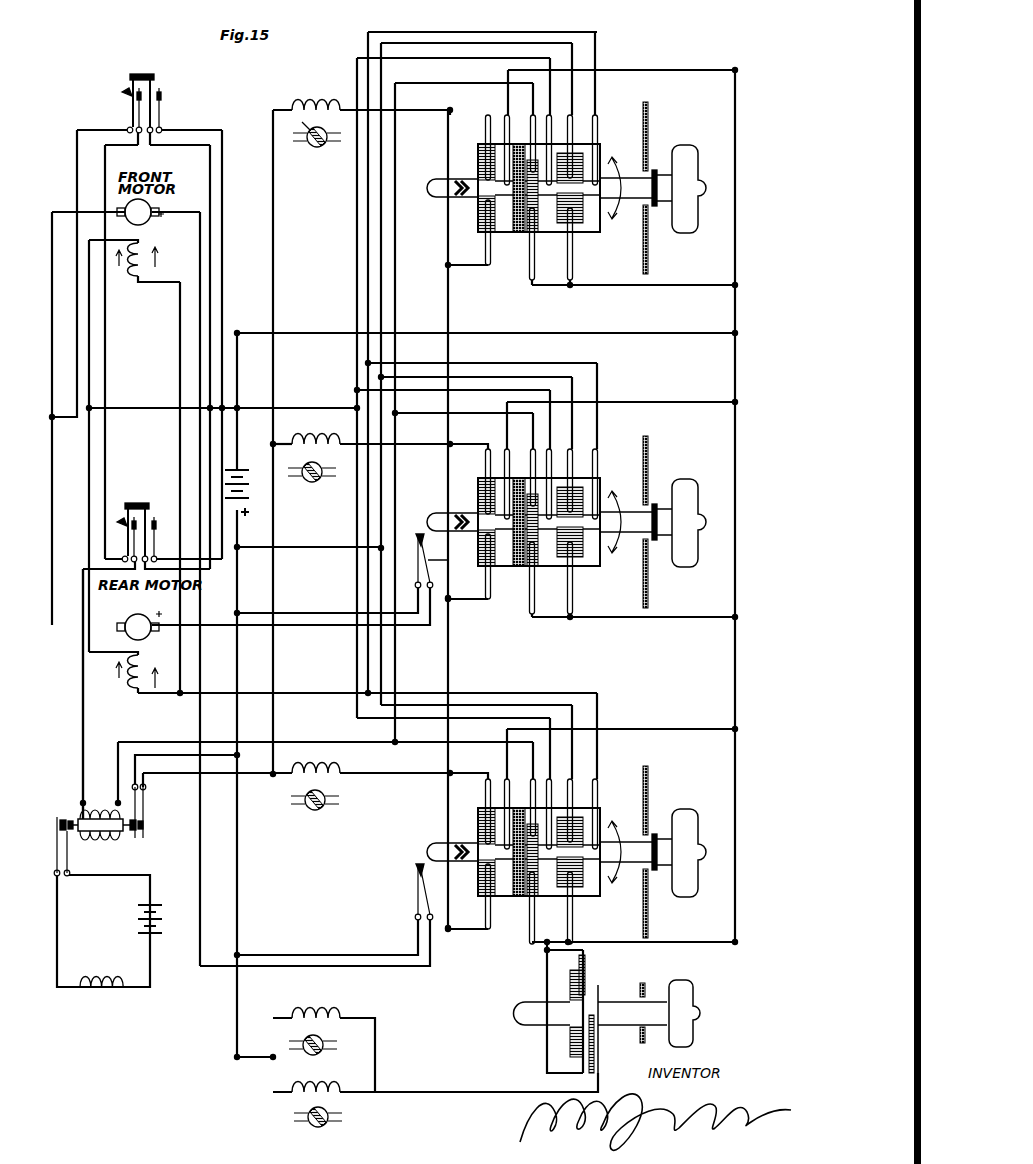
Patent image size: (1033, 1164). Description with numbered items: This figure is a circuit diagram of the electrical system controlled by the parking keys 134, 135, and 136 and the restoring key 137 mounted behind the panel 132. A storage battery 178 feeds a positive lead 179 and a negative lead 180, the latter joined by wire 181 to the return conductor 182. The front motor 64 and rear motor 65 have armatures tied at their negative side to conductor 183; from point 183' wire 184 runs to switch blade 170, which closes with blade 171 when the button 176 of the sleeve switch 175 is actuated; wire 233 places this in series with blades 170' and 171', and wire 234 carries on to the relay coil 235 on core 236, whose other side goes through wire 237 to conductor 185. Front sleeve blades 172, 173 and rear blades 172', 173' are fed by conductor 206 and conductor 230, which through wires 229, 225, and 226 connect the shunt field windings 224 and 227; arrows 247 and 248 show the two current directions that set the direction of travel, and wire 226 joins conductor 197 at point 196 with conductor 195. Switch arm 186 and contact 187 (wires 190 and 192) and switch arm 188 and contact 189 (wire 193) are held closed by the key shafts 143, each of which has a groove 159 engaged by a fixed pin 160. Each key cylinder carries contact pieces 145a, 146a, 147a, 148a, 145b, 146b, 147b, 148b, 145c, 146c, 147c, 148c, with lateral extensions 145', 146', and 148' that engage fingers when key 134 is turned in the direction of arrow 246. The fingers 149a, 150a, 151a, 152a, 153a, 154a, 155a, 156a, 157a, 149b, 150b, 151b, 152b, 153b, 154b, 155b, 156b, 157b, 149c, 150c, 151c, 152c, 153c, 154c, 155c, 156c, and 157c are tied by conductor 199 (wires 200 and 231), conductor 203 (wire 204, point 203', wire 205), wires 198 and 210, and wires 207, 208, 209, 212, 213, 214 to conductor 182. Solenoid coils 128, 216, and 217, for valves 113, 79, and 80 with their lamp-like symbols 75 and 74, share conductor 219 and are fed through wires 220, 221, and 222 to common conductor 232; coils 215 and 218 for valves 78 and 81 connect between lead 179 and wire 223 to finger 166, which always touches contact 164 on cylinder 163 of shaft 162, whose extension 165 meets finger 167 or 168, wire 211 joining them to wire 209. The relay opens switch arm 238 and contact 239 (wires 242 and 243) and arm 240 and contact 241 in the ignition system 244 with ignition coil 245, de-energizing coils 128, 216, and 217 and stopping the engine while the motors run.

The front switch 175 is at (141, 78).
The button 176 is at (120, 88).
The switch blade 170 is at (93, 93).
The switch blade 171 is at (106, 110).
The switch blade 172 is at (173, 72).
The switch blade 173 is at (178, 95).
The wire 233 is at (104, 158).
The wire 184 is at (77, 195).
The conductor 183 is at (35, 486).
The point 183' is at (46, 292).
The conductor 230 is at (222, 180).
The conductor 206 is at (225, 265).
The wire 193 is at (200, 205).
The front motor 64 is at (145, 218).
The rear motor 65 is at (141, 612).
The arrow 247 is at (118, 258).
The arrow 248 is at (155, 257).
The shunt field winding 224 is at (127, 284).
The wire 225 is at (90, 320).
The wire 226 is at (180, 340).
The wire 229 is at (172, 408).
The switch blade 172' is at (131, 520).
The switch blade 173' is at (157, 480).
The switch blade 170' is at (86, 515).
The switch blade 171' is at (88, 540).
The wire 234 is at (82, 683).
The shunt field winding 227 is at (135, 692).
The conductor 197 is at (178, 697).
The wire 242 is at (171, 742).
The wire 237 is at (320, 742).
The relay coil 235 is at (102, 815).
The magnetic core 236 is at (82, 836).
The switch arm 238 is at (138, 803).
The switch contact 239 is at (146, 835).
The switch contact 241 is at (55, 833).
The switch arm 240 is at (68, 868).
The wire 243 is at (213, 775).
The ignition system 244 is at (150, 955).
The ignition coil 245 is at (108, 990).
The conductor 219 is at (272, 118).
The solenoid coil 128 is at (309, 105).
The valve 113 is at (313, 150).
The conductor 195 is at (366, 192).
The conductor 185 is at (394, 215).
The conductor 203 is at (425, 365).
The conductor 199 is at (380, 255).
The common conductor 232 is at (448, 133).
The main conductor 180 is at (240, 380).
The wire 181 is at (674, 338).
The wire 205 is at (287, 406).
The point 203' is at (335, 397).
The storage battery 178 is at (250, 484).
The main conductor 179 is at (255, 578).
The solenoid coil 216 is at (327, 443).
The wire 221 is at (444, 446).
The lamp filament 75 is at (304, 468).
The valve 79 is at (310, 478).
The wire 231 is at (324, 546).
The wire 192 is at (324, 613).
The wire 190 is at (290, 626).
The point 196 is at (370, 692).
The solenoid coil 217 is at (332, 768).
The lamp filament 74 is at (293, 804).
The valve 80 is at (317, 812).
The wire 222 is at (360, 775).
The contact member 187 is at (412, 540).
The switch arm 186 is at (428, 566).
The contact member 189 is at (418, 882).
The switch arm 188 is at (420, 899).
The solenoid coil 215 is at (315, 1017).
The valve 78 is at (325, 1038).
The solenoid coil 218 is at (322, 1092).
The wire 223 is at (454, 1090).
The valve 81 is at (311, 1115).
The conductor 182 is at (736, 320).
The wire 212 is at (717, 73).
The wire 207 is at (699, 288).
The wire 213 is at (704, 403).
The wire 208 is at (709, 621).
The wire 214 is at (702, 733).
The wire 209 is at (709, 943).
The wire 200 is at (512, 364).
The wire 198 is at (566, 365).
The wire 210 is at (496, 415).
The wire 204 is at (433, 365).
The wire 220 is at (444, 113).
The panel 132 is at (651, 130).
The parking key 134 is at (690, 185).
The lateral extension 146' is at (715, 173).
The shaft 143 is at (638, 193).
The lateral extension 145' is at (640, 192).
The switch finger 149a is at (592, 127).
The arrow head 246 is at (620, 170).
The switch finger 152a is at (534, 113).
The switch finger 151a is at (543, 95).
The switch finger 150a is at (593, 115).
The switch finger 153a is at (502, 108).
The switch finger 154a is at (486, 112).
The lateral extension 148' is at (446, 163).
The V-shaped groove 159 is at (448, 172).
The fixed pin 160 is at (448, 207).
The switch finger 157a is at (485, 245).
The contact piece 148a is at (505, 222).
The contact strip 147a is at (518, 228).
The switch finger 156a is at (530, 230).
The contact piece 146a is at (548, 230).
The switch finger 155a is at (568, 245).
The contact piece 145a is at (585, 215).
The parking key 135 is at (690, 553).
The switch finger 152b is at (530, 453).
The switch finger 153b is at (505, 457).
The switch finger 151b is at (565, 455).
The switch finger 150b is at (570, 469).
The switch finger 149b is at (597, 460).
The switch finger 154b is at (493, 463).
The switch finger 157b is at (488, 582).
The contact piece 145b is at (585, 560).
The switch finger 155b is at (572, 580).
The contact piece 148b is at (505, 570).
The contact strip 147b is at (522, 570).
The contact piece 146b is at (550, 572).
The switch finger 156b is at (535, 570).
The parking key 136 is at (690, 833).
The switch finger 152c is at (530, 782).
The switch finger 153c is at (505, 787).
The switch finger 154c is at (493, 802).
The switch finger 151c is at (571, 786).
The switch finger 150c is at (576, 800).
The switch finger 149c is at (597, 792).
The switch finger 157c is at (488, 917).
The contact piece 145c is at (585, 890).
The switch finger 155c is at (572, 910).
The contact piece 146c is at (548, 904).
The contact piece 148c is at (510, 900).
The contact strip 147c is at (520, 900).
The switch finger 156c is at (532, 910).
The restoring key 137 is at (680, 988).
The switch finger 168 is at (586, 962).
The contact piece 164 is at (584, 997).
The lateral extension 165 is at (540, 1010).
The wire 211 is at (547, 1040).
The rotary shaft 162 is at (620, 1030).
The insulated cylinder 163 is at (570, 1035).
The switch finger 167 is at (578, 1065).
The switch finger 166 is at (592, 1068).